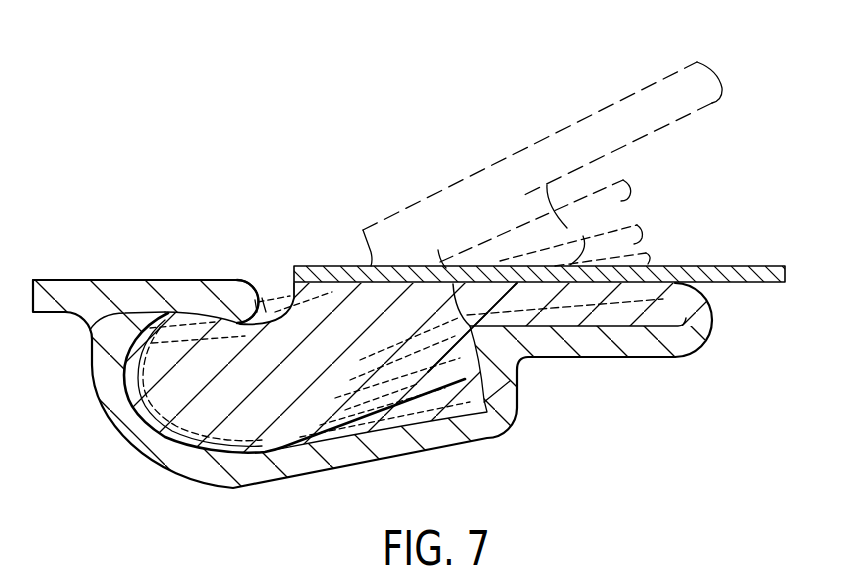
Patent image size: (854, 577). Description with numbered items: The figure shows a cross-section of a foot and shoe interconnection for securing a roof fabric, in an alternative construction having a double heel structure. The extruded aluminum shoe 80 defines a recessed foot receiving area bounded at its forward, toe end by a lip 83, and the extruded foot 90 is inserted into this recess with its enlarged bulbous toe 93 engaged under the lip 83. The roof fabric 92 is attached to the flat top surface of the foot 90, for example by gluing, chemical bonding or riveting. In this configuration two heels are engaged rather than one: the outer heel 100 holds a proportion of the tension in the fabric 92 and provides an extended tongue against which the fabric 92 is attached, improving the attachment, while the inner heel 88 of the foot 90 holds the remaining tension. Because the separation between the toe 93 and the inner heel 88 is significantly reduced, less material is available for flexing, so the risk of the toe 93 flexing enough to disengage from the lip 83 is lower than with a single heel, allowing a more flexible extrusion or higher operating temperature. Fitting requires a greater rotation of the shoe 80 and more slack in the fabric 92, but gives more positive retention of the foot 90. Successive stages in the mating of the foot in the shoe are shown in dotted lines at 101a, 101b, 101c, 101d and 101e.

The shoe 80 is at (101, 272).
The lip 83 is at (236, 298).
The inner heel 88 is at (492, 410).
The foot 90 is at (257, 400).
The roof fabric 92 is at (772, 262).
The toe 93 is at (95, 340).
The outer heel 100 is at (666, 322).
The first mating stage 101a is at (722, 72).
The second mating stage 101b is at (636, 176).
The third mating stage 101c is at (650, 212).
The fourth mating stage 101d is at (656, 248).
The fifth mating stage 101e is at (676, 306).